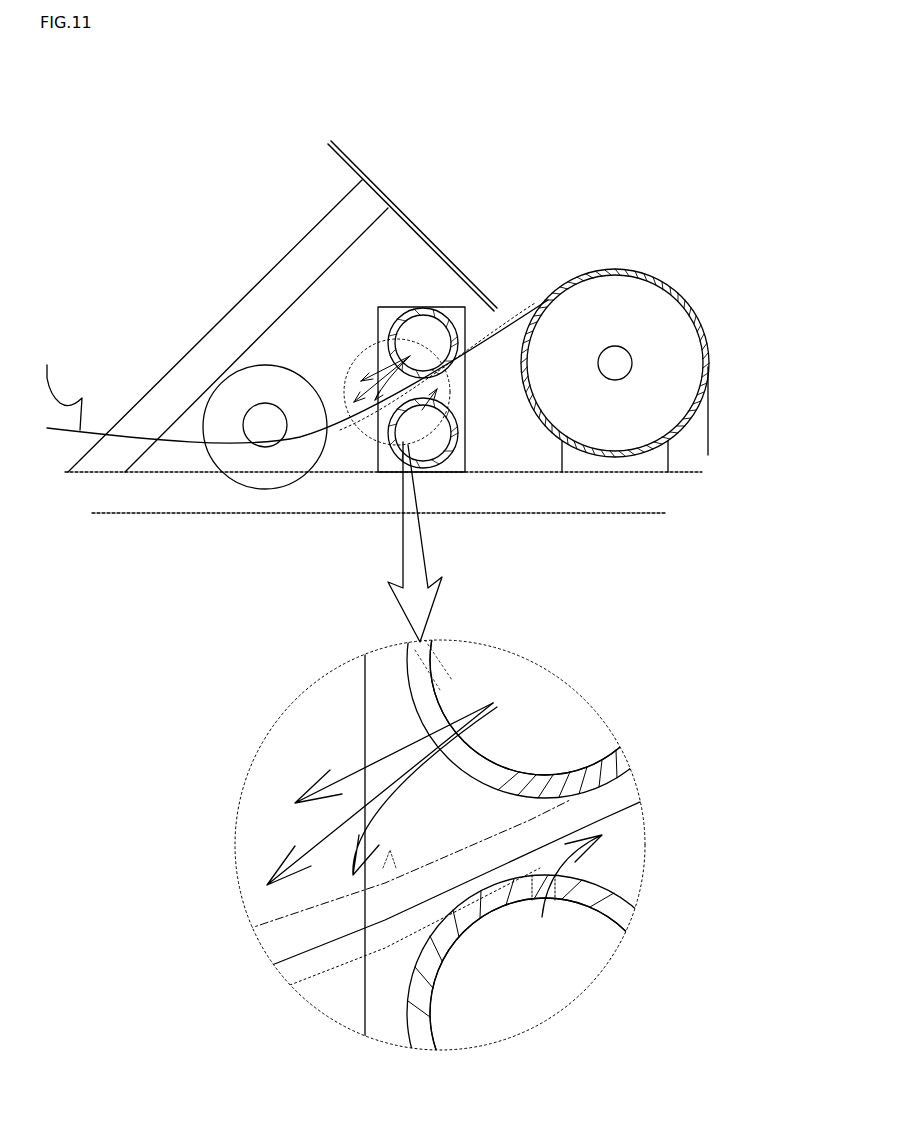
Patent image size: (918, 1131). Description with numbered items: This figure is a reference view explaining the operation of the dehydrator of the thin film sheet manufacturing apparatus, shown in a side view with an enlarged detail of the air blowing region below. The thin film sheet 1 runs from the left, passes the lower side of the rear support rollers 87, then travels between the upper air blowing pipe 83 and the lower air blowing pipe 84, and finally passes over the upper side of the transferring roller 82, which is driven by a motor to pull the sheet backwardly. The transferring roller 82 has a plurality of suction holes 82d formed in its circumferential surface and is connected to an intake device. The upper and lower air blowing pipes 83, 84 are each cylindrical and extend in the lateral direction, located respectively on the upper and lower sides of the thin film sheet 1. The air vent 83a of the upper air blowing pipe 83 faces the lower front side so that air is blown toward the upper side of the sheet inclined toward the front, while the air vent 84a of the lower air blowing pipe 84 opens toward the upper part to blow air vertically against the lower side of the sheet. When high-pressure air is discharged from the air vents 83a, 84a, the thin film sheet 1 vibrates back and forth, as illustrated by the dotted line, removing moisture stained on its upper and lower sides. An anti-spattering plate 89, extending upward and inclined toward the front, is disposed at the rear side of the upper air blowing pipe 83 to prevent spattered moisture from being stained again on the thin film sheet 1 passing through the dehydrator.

The thin film sheet 1 is at (712, 433).
The transferring roller 82 is at (667, 285).
The suction holes 82d is at (577, 273).
The upper air blowing pipe 83 is at (405, 312).
The air vent 83a is at (447, 720).
The lower air blowing pipe 84 is at (455, 440).
The air vent 84a is at (537, 900).
The rear support rollers 87 is at (252, 402).
The anti-spattering plate 89 is at (423, 229).